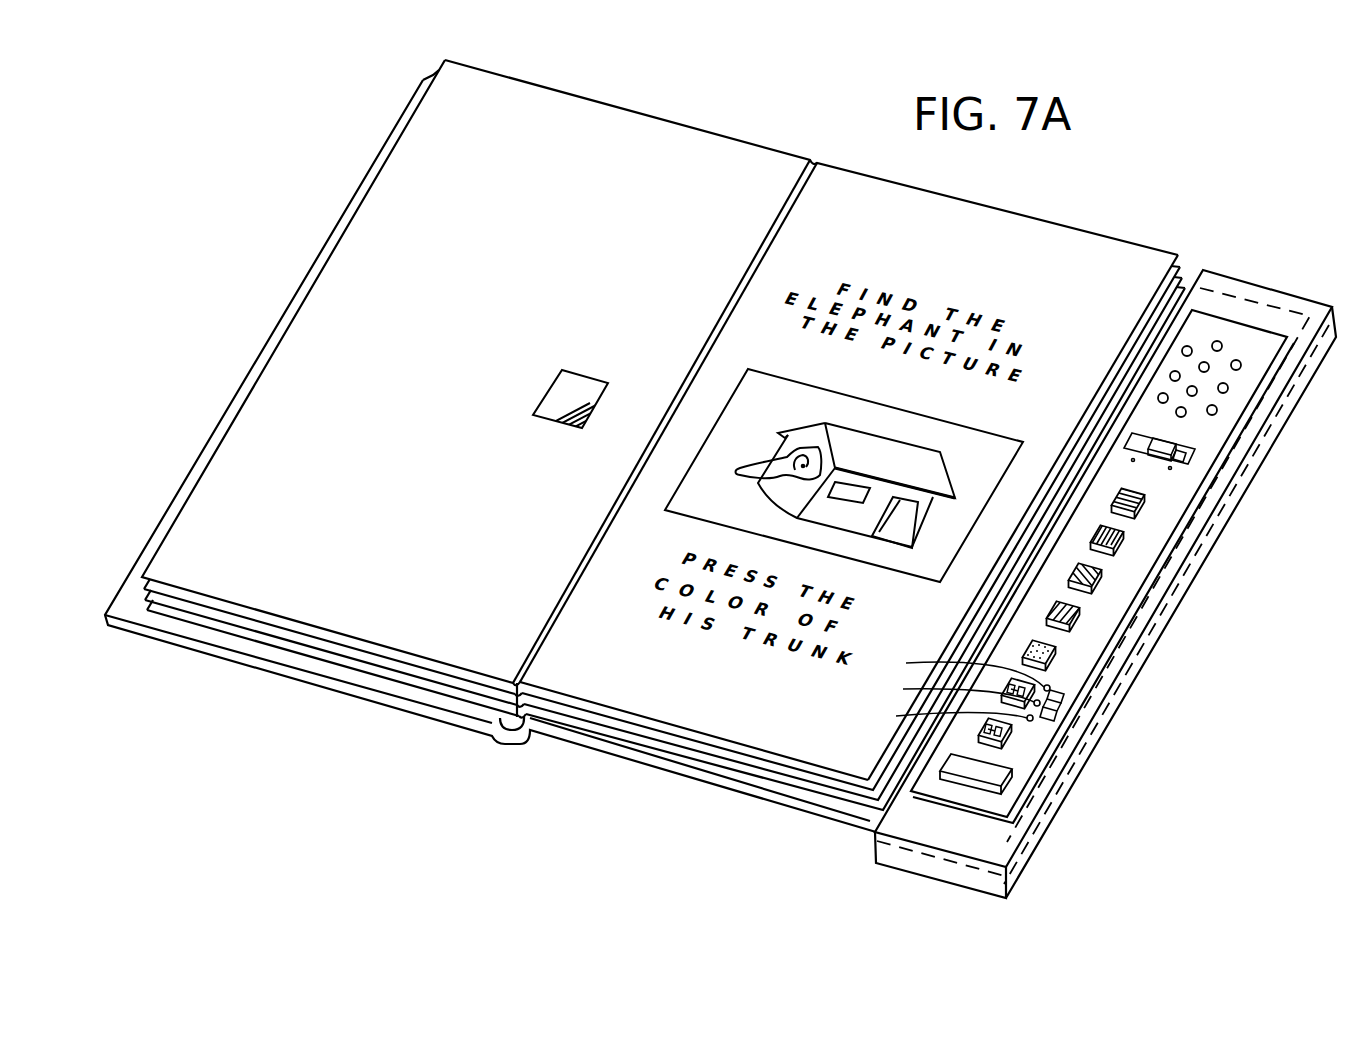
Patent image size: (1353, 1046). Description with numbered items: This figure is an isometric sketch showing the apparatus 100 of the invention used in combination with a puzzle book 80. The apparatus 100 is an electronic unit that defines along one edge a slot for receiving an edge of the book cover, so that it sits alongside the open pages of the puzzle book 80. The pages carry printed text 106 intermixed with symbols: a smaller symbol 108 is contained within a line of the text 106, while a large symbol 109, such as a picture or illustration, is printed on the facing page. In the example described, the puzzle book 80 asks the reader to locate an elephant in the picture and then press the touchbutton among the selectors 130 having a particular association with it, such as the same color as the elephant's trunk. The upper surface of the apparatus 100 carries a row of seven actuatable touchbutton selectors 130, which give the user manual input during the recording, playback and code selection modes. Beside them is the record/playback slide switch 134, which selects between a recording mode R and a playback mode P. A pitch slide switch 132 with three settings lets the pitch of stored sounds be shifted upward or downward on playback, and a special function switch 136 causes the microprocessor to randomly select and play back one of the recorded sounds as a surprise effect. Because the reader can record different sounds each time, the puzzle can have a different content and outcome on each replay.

The puzzle book 80 is at (411, 100).
The apparatus 100 is at (1243, 275).
The text 106 is at (428, 222).
The smaller symbol 108 is at (536, 402).
The large symbol 109 is at (770, 395).
The selectors 130 is at (1103, 580).
The pitch slide switch 132 is at (1052, 714).
The record/playback slide switch 134 is at (1187, 460).
The special function switch 136 is at (994, 776).